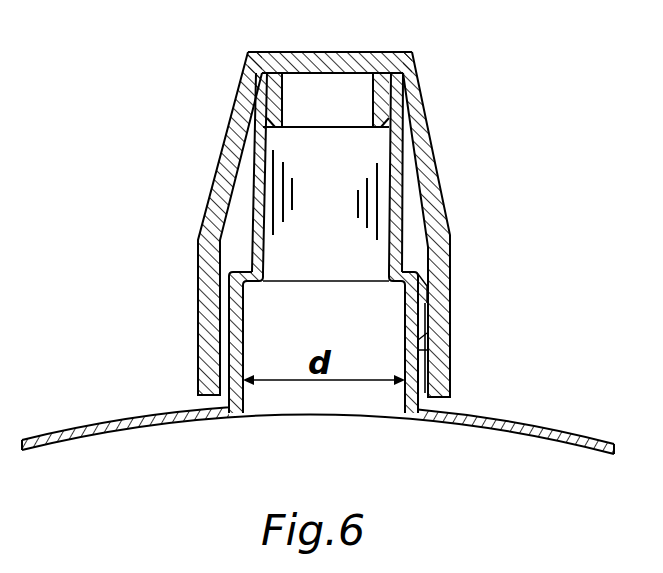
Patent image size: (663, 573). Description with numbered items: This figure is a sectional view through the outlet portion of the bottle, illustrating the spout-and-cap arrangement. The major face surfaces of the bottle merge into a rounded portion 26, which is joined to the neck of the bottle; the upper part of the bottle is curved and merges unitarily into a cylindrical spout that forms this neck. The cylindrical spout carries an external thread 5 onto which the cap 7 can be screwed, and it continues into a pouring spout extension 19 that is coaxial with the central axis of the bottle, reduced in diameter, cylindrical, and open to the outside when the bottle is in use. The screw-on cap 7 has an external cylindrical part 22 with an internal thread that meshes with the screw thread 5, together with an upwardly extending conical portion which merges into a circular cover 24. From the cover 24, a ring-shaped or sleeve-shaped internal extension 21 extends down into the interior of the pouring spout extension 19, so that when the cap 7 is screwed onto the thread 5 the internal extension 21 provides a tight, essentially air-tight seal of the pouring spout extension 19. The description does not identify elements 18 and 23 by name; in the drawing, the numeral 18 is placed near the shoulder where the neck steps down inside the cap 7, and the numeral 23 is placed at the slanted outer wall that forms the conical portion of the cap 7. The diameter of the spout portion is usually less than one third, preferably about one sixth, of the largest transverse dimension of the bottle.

The external thread 5 is at (404, 348).
The cap 7 is at (287, 203).
The neck shoulder 18 is at (254, 303).
The pouring spout extension 19 is at (251, 172).
The internal extension 21 is at (288, 104).
The external cylindrical part 22 is at (197, 373).
The outer cap wall 23 is at (207, 203).
The circular cover 24 is at (343, 72).
The rounded portion 26 is at (117, 423).